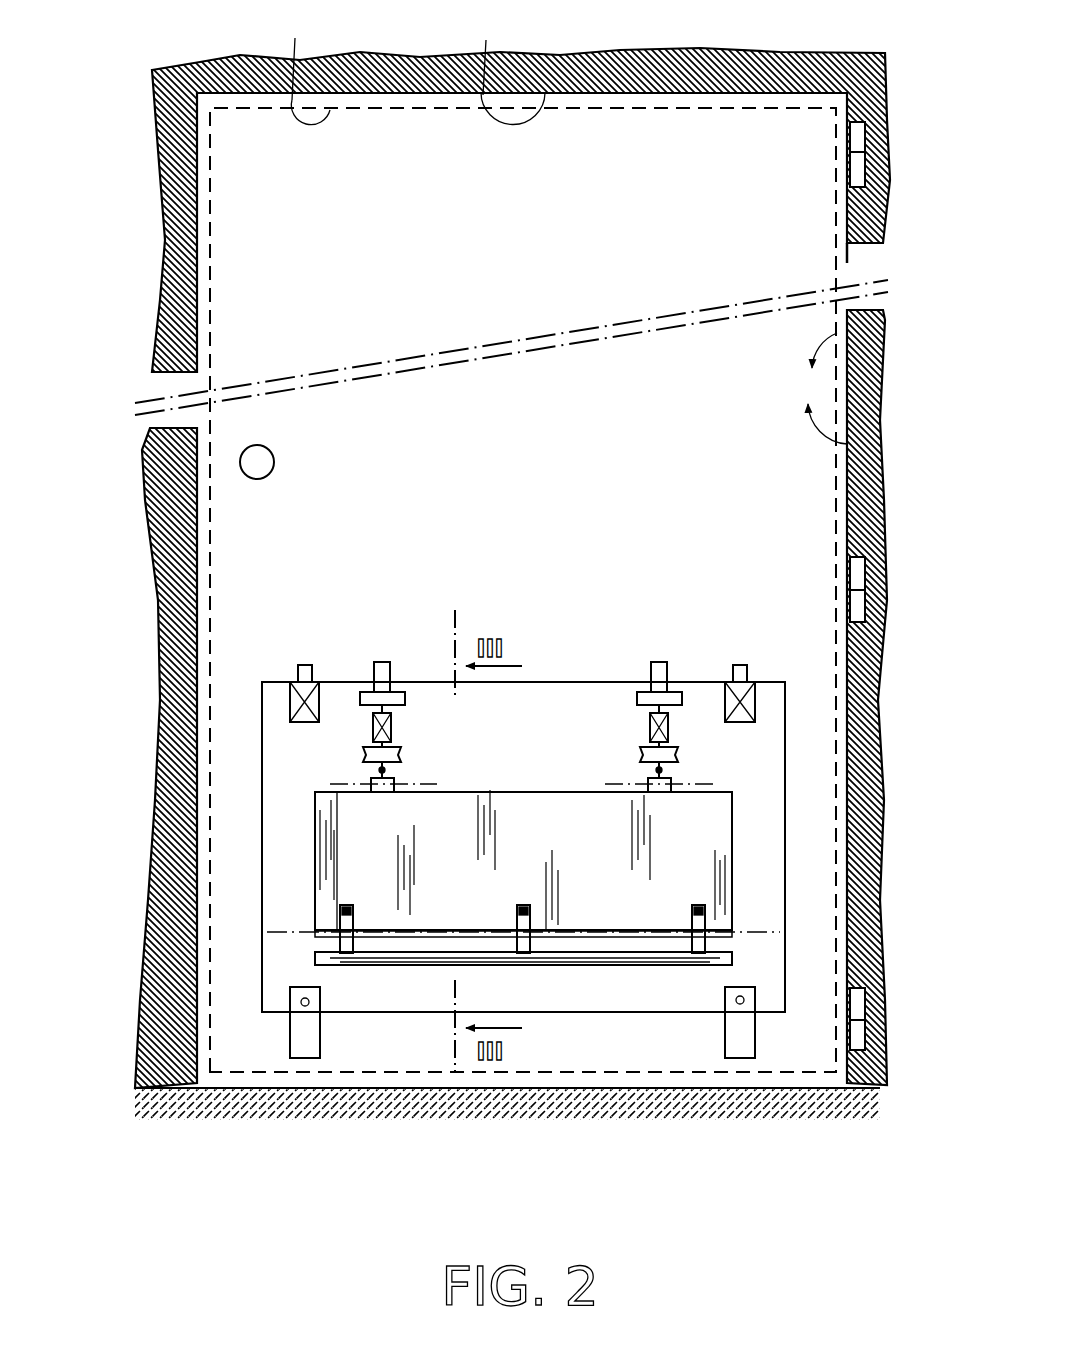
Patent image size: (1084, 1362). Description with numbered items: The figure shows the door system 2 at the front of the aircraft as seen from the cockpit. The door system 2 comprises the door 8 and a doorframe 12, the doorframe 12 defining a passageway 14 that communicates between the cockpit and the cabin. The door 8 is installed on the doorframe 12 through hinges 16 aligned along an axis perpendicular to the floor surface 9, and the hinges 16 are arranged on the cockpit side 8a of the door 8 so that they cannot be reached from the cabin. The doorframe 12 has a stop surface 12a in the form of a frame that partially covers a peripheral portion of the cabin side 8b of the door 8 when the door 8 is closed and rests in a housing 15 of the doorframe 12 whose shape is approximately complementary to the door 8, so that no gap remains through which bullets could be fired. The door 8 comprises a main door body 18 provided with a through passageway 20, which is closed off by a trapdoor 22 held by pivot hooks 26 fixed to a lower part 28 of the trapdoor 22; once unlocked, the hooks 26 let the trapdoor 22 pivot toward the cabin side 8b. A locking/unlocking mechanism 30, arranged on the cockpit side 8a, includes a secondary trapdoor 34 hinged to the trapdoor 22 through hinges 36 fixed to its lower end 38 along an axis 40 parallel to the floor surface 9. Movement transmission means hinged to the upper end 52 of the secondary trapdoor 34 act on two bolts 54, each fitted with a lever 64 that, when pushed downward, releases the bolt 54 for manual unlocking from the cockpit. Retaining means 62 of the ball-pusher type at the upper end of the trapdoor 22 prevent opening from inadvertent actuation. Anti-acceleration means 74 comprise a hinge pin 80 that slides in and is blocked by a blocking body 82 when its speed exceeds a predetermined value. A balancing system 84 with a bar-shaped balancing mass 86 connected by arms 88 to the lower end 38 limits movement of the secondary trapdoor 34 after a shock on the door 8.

The door system 2 is at (127, 212).
The door 8 is at (768, 142).
The cockpit side of the door 8a is at (848, 445).
The cabin side of the door 8b is at (888, 328).
The floor surface 9 is at (150, 1068).
The doorframe 12 is at (168, 87).
The stop surface 12a is at (686, 46).
The passageway 14 is at (299, 65).
The housing 15 is at (505, 63).
The hinges 16 is at (858, 168).
The main door body 18 is at (230, 507).
The through passageway 20 is at (522, 693).
The trapdoor 22 is at (770, 780).
The pivot hooks 26 is at (305, 1058).
The lower part of the trapdoor 28 is at (392, 997).
The locking/unlocking mechanism 30 is at (752, 843).
The secondary trapdoor 34 is at (360, 816).
The hinges of the secondary trapdoor 36 is at (317, 942).
The lower end of the secondary trapdoor 38 is at (448, 930).
The axis 40 is at (285, 928).
The upper end of the secondary trapdoor 52 is at (457, 793).
The bolt 54 is at (378, 662).
The retaining means 62 is at (292, 705).
The lever 64 is at (363, 697).
The anti-acceleration means 74 is at (684, 727).
The hinge pin 80 is at (650, 707).
The blocking body 82 is at (646, 730).
The balancing system 84 is at (585, 969).
The balancing mass 86 is at (657, 957).
The arms 88 is at (697, 905).